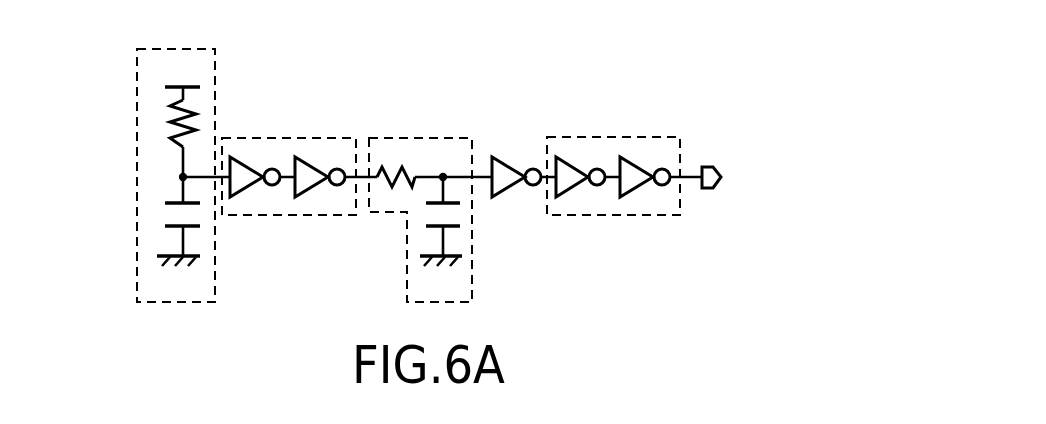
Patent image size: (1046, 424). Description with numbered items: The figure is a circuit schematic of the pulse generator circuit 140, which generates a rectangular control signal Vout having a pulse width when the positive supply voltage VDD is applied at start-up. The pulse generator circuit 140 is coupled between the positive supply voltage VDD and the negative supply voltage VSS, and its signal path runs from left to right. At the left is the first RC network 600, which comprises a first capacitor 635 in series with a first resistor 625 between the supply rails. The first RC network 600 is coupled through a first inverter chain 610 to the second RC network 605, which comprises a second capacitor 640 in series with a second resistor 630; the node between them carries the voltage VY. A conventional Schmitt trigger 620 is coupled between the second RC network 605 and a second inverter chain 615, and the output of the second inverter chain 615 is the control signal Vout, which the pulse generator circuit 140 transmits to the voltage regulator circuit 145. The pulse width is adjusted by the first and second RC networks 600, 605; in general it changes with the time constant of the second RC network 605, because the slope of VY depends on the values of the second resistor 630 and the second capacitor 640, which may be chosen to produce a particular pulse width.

The pulse generator circuit 140 is at (97, 60).
The first RC network 600 is at (217, 83).
The second RC network 605 is at (420, 137).
The first inverter chain 610 is at (288, 137).
The second inverter chain 615 is at (616, 137).
The Schmitt trigger 620 is at (503, 157).
The first resistor 625 is at (172, 134).
The second resistor 630 is at (396, 187).
The first capacitor 635 is at (172, 226).
The second capacitor 640 is at (452, 228).
The voltage regulator circuit 145 is at (797, 171).